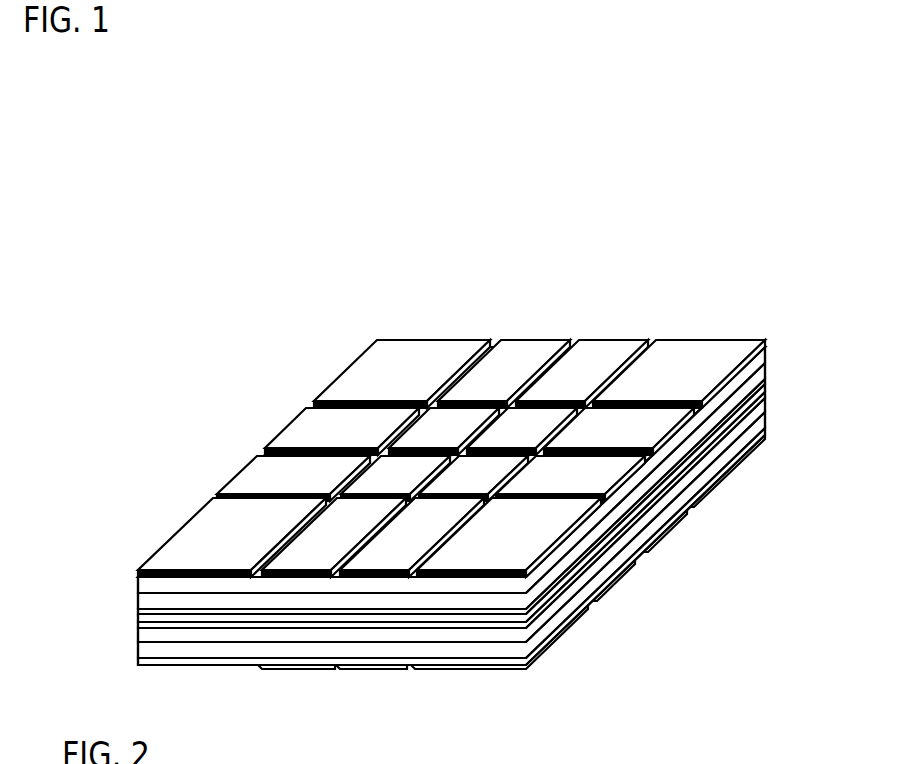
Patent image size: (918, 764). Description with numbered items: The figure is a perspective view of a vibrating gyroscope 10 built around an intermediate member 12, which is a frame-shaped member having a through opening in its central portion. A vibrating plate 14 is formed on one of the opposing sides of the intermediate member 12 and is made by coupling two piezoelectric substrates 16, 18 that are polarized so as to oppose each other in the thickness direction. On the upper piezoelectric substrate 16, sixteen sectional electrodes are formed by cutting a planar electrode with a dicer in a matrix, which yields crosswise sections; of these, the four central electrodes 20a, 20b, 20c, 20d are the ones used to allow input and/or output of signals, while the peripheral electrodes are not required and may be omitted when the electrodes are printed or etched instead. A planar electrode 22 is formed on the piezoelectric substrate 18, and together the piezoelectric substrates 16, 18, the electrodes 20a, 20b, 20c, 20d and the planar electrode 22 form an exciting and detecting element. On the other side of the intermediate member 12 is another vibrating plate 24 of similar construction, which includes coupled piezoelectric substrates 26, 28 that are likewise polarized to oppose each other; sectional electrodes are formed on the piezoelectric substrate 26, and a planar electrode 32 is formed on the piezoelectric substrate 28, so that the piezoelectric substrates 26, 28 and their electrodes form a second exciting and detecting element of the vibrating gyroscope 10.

The vibrating gyroscope 10 is at (231, 108).
The intermediate member 12 is at (140, 615).
The vibrating plate 14 is at (619, 633).
The piezoelectric substrate 16 is at (542, 573).
The piezoelectric substrate 18 is at (535, 588).
The electrode 20a is at (452, 423).
The electrode 20b is at (533, 428).
The electrode 20c is at (380, 485).
The electrode 20d is at (480, 475).
The planar electrode 22 is at (140, 608).
The vibrating plate 24 is at (503, 692).
The piezoelectric substrate 26 is at (463, 640).
The piezoelectric substrate 28 is at (450, 657).
The planar electrode 32 is at (140, 625).